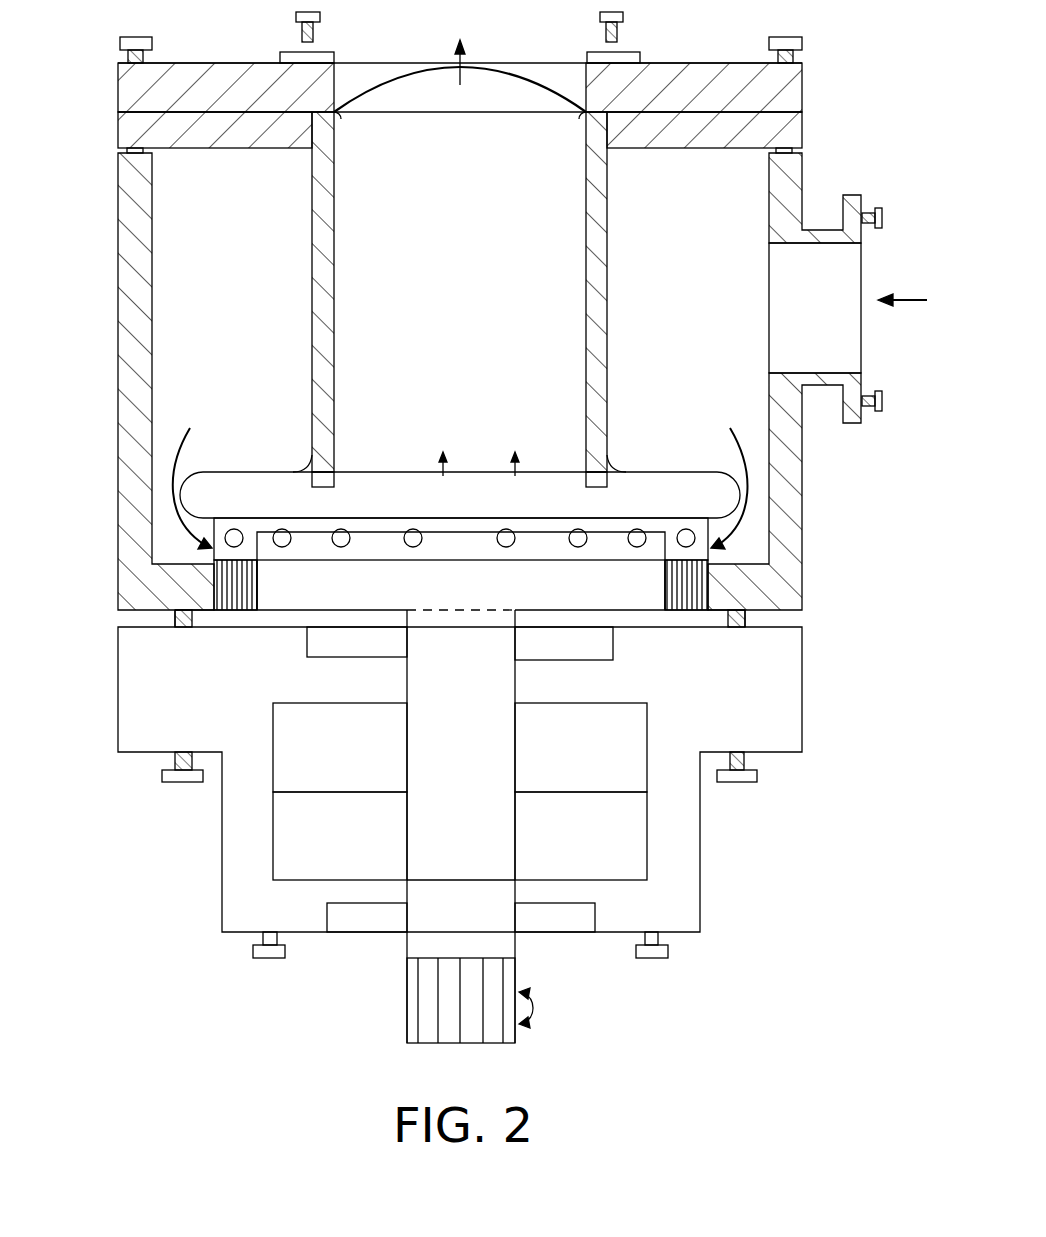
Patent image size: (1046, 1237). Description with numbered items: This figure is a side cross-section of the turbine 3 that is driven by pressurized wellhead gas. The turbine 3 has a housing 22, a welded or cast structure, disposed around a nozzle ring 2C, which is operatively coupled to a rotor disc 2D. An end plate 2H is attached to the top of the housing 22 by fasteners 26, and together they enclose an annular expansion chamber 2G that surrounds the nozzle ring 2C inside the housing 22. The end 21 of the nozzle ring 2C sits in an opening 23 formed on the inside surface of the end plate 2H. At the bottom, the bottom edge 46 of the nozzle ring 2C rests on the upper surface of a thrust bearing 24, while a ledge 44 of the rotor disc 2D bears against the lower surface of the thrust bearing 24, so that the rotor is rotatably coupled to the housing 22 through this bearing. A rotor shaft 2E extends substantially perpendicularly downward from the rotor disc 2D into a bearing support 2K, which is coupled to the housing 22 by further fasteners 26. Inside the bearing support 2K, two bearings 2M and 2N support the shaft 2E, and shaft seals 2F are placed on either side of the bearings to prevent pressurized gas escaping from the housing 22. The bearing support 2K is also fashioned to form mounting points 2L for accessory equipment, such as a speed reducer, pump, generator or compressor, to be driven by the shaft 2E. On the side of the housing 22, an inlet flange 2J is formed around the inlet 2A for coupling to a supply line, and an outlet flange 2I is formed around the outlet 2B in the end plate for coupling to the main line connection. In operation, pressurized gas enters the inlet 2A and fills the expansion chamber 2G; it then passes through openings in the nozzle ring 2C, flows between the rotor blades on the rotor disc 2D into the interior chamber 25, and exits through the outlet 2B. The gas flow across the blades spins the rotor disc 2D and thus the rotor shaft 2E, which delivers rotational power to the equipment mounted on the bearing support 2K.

The turbine 3 is at (62, 57).
The end plate 2H is at (803, 97).
The end 21 is at (586, 122).
The opening 23 is at (338, 118).
The outlet 2B is at (462, 46).
The fasteners 26 is at (143, 37).
The outlet flange 2I is at (624, 52).
The housing 22 is at (772, 585).
The inlet 2A is at (867, 308).
The inlet flange 2J is at (862, 200).
The annular expansion chamber 2G is at (254, 318).
The nozzle ring 2C is at (335, 352).
The interior chamber 25 is at (508, 378).
The rotor disc 2D is at (388, 600).
The bottom edge 46 is at (214, 562).
The thrust bearing 24 is at (235, 595).
The ledge 44 is at (257, 612).
The bearing support 2K is at (803, 683).
The shaft seals 2F is at (564, 779).
The bearing 2M is at (597, 774).
The bearing 2N is at (596, 864).
The rotor shaft 2E is at (480, 737).
The mounting points 2L is at (262, 975).